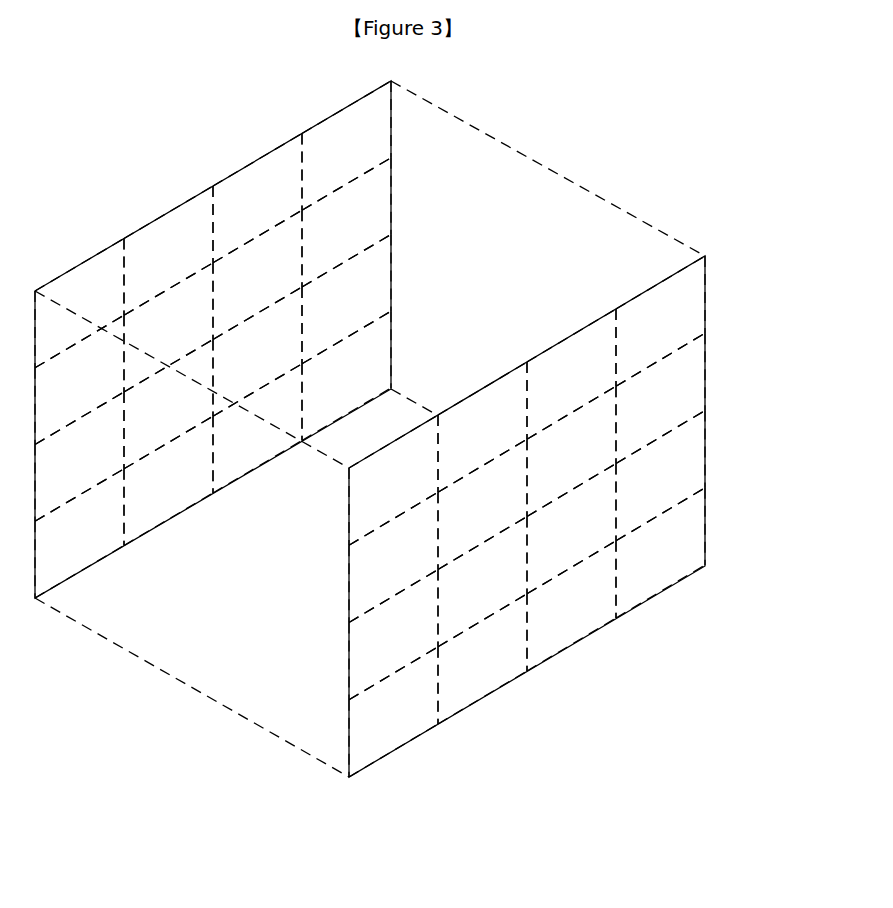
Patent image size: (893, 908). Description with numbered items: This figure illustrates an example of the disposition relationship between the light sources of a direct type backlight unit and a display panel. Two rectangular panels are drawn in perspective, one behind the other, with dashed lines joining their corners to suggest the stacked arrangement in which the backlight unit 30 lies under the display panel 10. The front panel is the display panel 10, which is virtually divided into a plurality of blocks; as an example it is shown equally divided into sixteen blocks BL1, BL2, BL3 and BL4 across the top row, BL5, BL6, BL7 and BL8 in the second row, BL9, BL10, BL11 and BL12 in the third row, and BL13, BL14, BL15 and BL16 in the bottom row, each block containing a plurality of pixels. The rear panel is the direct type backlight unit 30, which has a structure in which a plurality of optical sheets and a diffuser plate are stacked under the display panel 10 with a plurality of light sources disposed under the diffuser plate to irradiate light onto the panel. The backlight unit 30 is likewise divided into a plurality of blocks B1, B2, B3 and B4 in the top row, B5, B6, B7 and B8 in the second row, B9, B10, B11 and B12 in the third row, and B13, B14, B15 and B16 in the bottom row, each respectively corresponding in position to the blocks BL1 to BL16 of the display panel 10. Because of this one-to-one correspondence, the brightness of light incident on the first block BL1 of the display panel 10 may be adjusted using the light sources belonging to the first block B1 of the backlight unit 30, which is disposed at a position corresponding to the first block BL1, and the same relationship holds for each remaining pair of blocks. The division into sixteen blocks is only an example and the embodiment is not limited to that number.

The display panel 10 is at (565, 516).
The backlight unit 30 is at (253, 339).
The first block of the backlight unit B1 is at (79, 303).
The block of the backlight unit B2 is at (168, 250).
The block of the backlight unit B3 is at (257, 198).
The block of the backlight unit B4 is at (346, 145).
The block of the backlight unit B5 is at (79, 379).
The block of the backlight unit B6 is at (168, 327).
The block of the backlight unit B7 is at (257, 274).
The block of the backlight unit B8 is at (346, 222).
The block of the backlight unit B9 is at (79, 456).
The block of the backlight unit B10 is at (168, 404).
The block of the backlight unit B11 is at (257, 351).
The block of the backlight unit B12 is at (346, 299).
The block of the backlight unit B13 is at (79, 533).
The block of the backlight unit B14 is at (168, 480).
The block of the backlight unit B15 is at (257, 428).
The block of the backlight unit B16 is at (346, 375).
The first block of the display panel BL1 is at (393, 480).
The block of the display panel BL2 is at (482, 427).
The block of the display panel BL3 is at (571, 374).
The block of the display panel BL4 is at (660, 321).
The block of the display panel BL5 is at (393, 557).
The block of the display panel BL6 is at (482, 504).
The block of the display panel BL7 is at (571, 451).
The block of the display panel BL8 is at (660, 398).
The block of the display panel BL9 is at (393, 635).
The block of the display panel BL10 is at (482, 582).
The block of the display panel BL11 is at (571, 529).
The block of the display panel BL12 is at (660, 476).
The block of the display panel BL13 is at (393, 712).
The block of the display panel BL14 is at (482, 659).
The block of the display panel BL15 is at (571, 606).
The block of the display panel BL16 is at (660, 553).